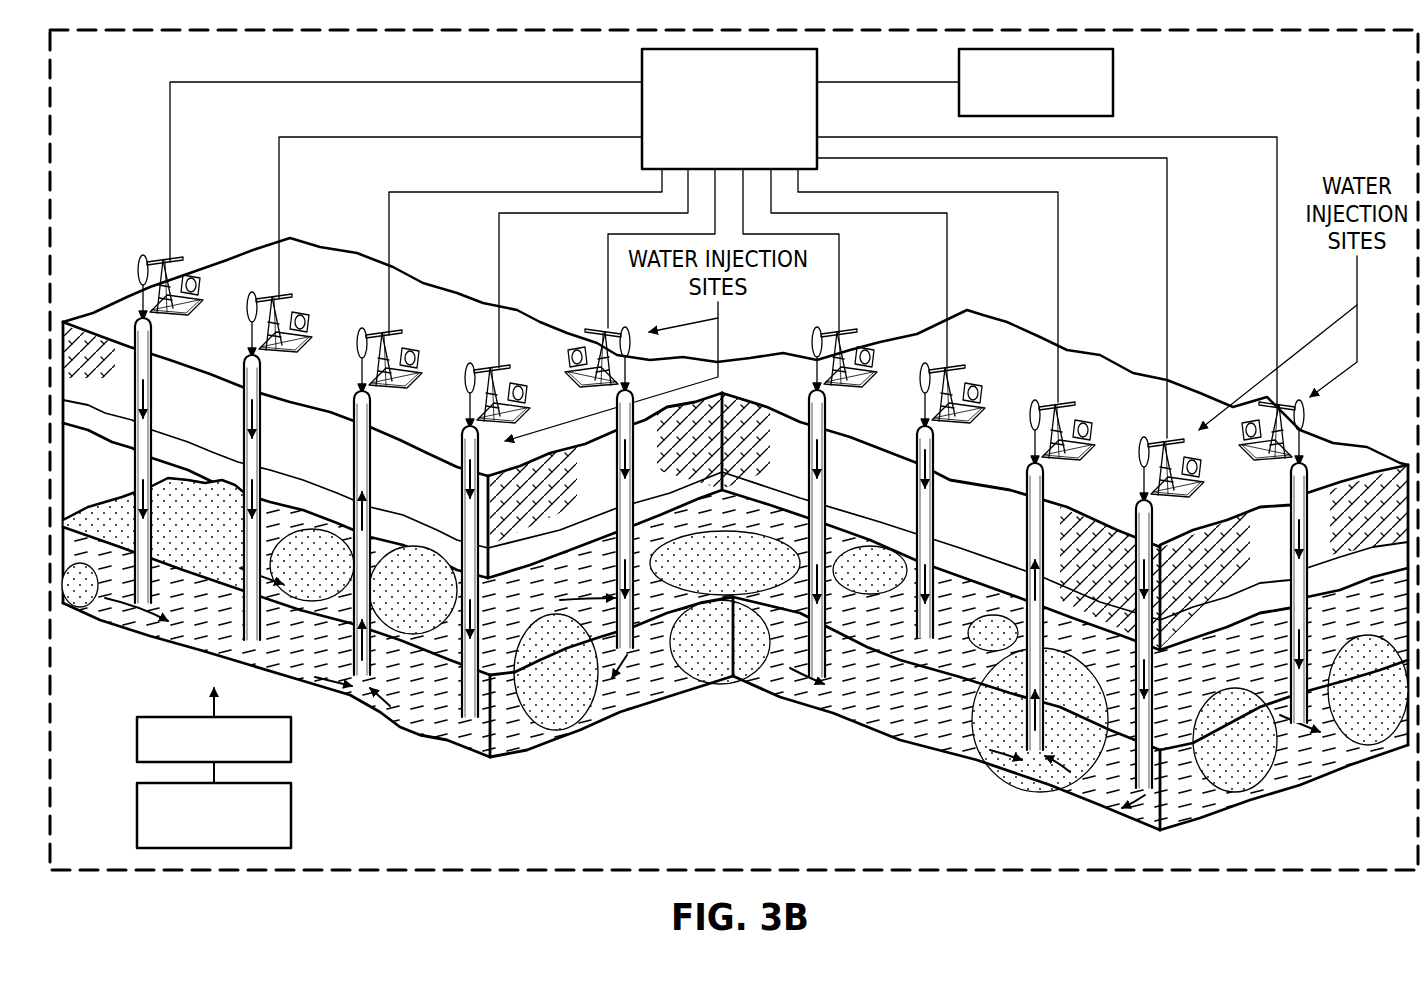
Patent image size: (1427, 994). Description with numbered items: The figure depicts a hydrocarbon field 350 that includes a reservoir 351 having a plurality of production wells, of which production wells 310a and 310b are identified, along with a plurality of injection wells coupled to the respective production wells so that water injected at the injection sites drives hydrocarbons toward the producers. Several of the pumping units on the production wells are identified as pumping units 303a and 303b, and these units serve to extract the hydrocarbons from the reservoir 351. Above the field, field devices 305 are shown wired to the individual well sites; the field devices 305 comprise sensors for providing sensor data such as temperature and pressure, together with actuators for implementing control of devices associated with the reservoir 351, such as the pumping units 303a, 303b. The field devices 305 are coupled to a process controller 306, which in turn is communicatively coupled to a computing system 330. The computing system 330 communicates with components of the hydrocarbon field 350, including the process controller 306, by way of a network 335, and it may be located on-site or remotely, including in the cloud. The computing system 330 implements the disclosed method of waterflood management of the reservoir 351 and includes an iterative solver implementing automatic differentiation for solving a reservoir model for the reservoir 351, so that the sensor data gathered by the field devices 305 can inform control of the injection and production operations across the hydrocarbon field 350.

The field devices 305 is at (708, 152).
The process controller 306 is at (1115, 76).
The pumping unit 303a is at (450, 340).
The pumping unit 303b is at (1117, 407).
The production well 310a is at (352, 465).
The production well 310b is at (1023, 528).
The computing system 330 is at (137, 815).
The network 335 is at (137, 738).
The hydrocarbon field 350 is at (735, 534).
The reservoir 351 is at (421, 710).